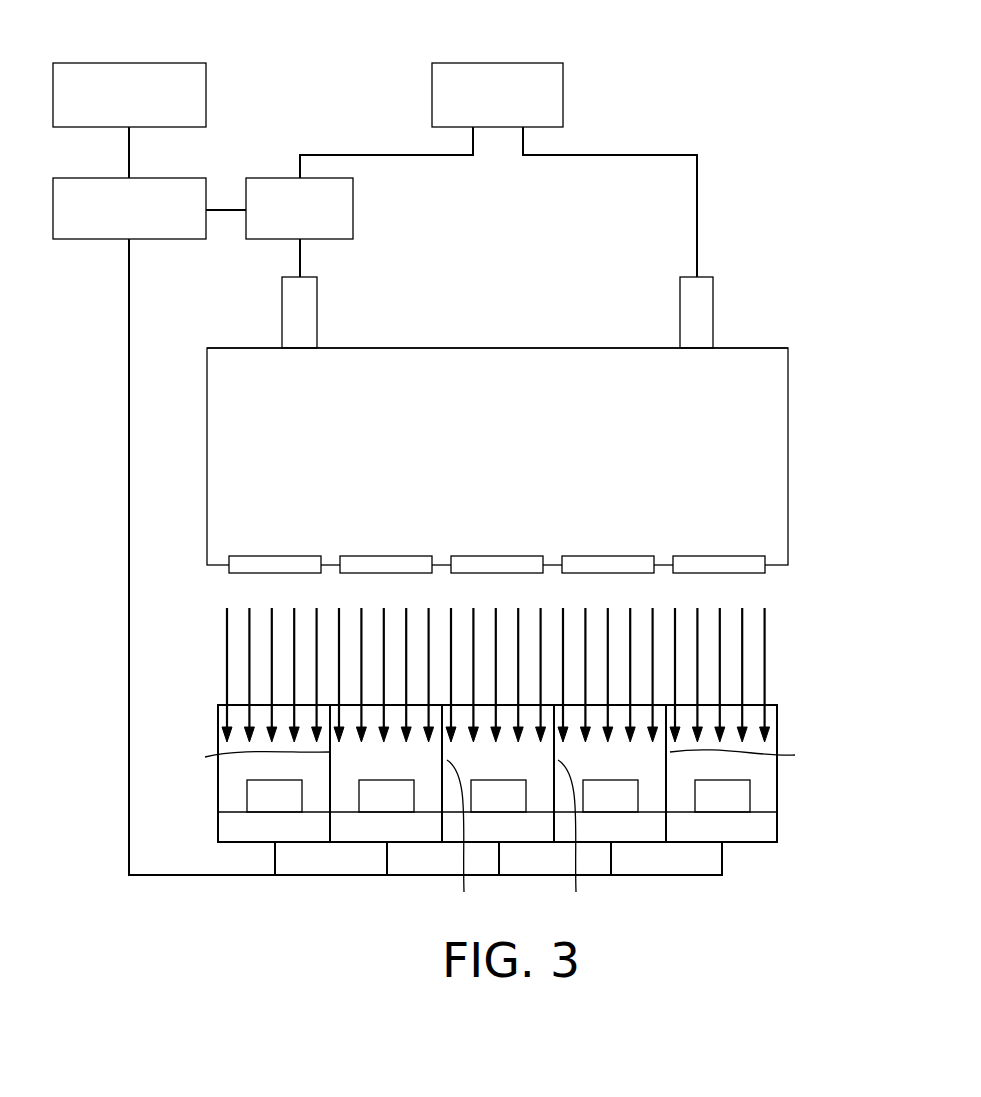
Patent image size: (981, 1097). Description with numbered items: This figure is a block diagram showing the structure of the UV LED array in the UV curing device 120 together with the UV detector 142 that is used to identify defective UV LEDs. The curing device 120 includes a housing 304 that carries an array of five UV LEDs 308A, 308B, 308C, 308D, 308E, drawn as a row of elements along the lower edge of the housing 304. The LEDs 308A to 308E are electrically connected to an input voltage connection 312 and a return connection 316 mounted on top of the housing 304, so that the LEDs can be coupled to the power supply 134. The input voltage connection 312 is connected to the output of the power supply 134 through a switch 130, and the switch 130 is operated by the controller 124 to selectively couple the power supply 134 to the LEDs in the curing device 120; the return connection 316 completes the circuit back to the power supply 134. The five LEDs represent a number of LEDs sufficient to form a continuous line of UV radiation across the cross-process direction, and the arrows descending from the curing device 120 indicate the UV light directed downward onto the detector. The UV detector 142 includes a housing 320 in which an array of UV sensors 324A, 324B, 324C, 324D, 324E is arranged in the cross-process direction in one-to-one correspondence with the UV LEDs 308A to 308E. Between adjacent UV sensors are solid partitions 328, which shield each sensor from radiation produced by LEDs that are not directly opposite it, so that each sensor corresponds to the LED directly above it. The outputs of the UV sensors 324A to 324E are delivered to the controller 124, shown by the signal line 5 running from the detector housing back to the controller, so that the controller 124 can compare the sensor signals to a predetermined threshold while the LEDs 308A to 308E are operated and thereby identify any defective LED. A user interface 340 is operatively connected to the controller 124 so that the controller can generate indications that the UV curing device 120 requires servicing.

The user interface 340 is at (129, 62).
The power supply 134 is at (497, 62).
The controller 124 is at (163, 240).
The switch 130 is at (353, 208).
The input voltage connection 312 is at (317, 311).
The return connection 316 is at (680, 311).
The UV curing device 120 is at (768, 327).
The housing 304 is at (778, 458).
The control signal line 5 is at (117, 469).
The UV LED 308A is at (275, 573).
The UV LED 308B is at (386, 573).
The UV LED 308C is at (497, 573).
The UV LED 308D is at (608, 573).
The UV LED 308E is at (719, 573).
The UV detector 142 is at (792, 775).
The housing 320 is at (780, 814).
The UV sensor 324A is at (247, 797).
The UV sensor 324B is at (387, 779).
The UV sensor 324C is at (499, 779).
The UV sensor 324D is at (611, 779).
The UV sensor 324E is at (750, 795).
The solid partition 328 is at (501, 835).